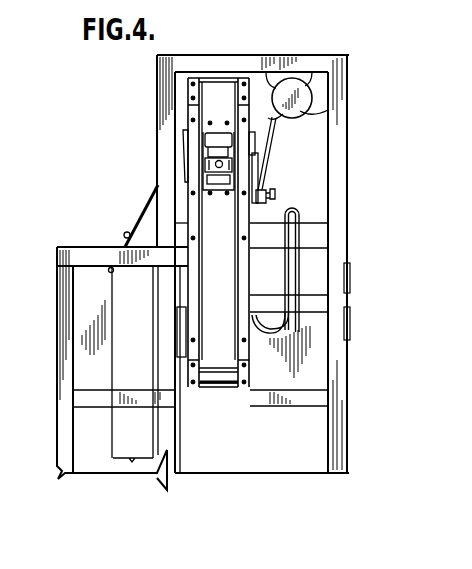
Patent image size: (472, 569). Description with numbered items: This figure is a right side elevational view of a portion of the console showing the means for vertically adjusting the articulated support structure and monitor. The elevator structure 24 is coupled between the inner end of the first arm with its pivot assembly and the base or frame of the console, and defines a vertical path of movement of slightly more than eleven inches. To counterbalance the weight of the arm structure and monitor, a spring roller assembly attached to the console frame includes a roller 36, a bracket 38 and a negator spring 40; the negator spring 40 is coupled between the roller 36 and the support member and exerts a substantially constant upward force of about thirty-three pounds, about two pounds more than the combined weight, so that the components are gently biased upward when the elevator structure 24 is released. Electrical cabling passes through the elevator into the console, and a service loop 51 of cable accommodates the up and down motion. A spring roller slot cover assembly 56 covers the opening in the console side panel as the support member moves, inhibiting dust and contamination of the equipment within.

The elevator structure 24 is at (203, 272).
The roller 36 is at (313, 112).
The bracket 38 is at (317, 82).
The negator spring 40 is at (268, 150).
The service loop 51 is at (293, 330).
The spring roller slot cover assembly 56 is at (250, 372).